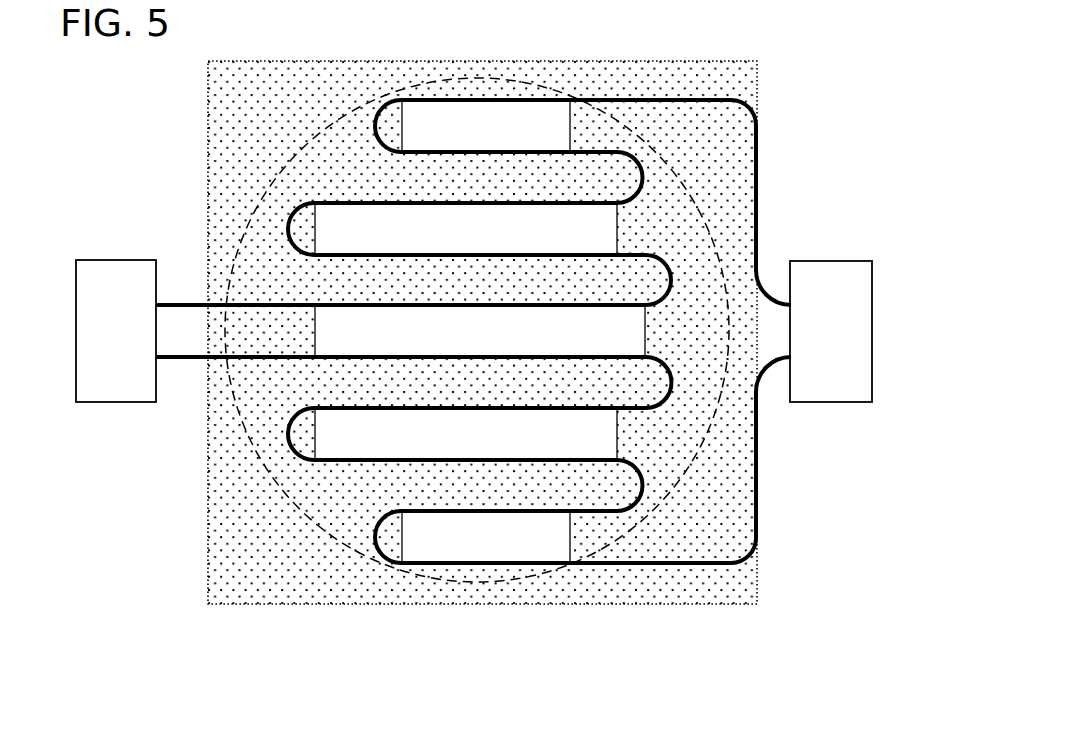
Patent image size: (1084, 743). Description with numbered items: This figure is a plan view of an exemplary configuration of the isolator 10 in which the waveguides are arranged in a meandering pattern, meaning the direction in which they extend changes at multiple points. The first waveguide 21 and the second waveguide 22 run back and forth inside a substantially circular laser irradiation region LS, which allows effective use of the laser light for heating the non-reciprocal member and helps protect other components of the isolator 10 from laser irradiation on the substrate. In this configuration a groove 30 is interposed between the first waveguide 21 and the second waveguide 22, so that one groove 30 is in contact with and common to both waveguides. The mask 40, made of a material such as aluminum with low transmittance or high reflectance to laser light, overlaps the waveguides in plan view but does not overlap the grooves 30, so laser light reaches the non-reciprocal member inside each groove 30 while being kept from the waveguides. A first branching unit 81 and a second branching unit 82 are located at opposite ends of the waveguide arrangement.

The isolator 10 is at (833, 82).
The first waveguide 21 is at (188, 305).
The second waveguide 22 is at (175, 359).
The groove 30 is at (468, 126).
The mask 40 is at (260, 114).
The first branching unit 81 is at (117, 278).
The second branching unit 82 is at (826, 281).
The laser irradiation region LS is at (272, 483).